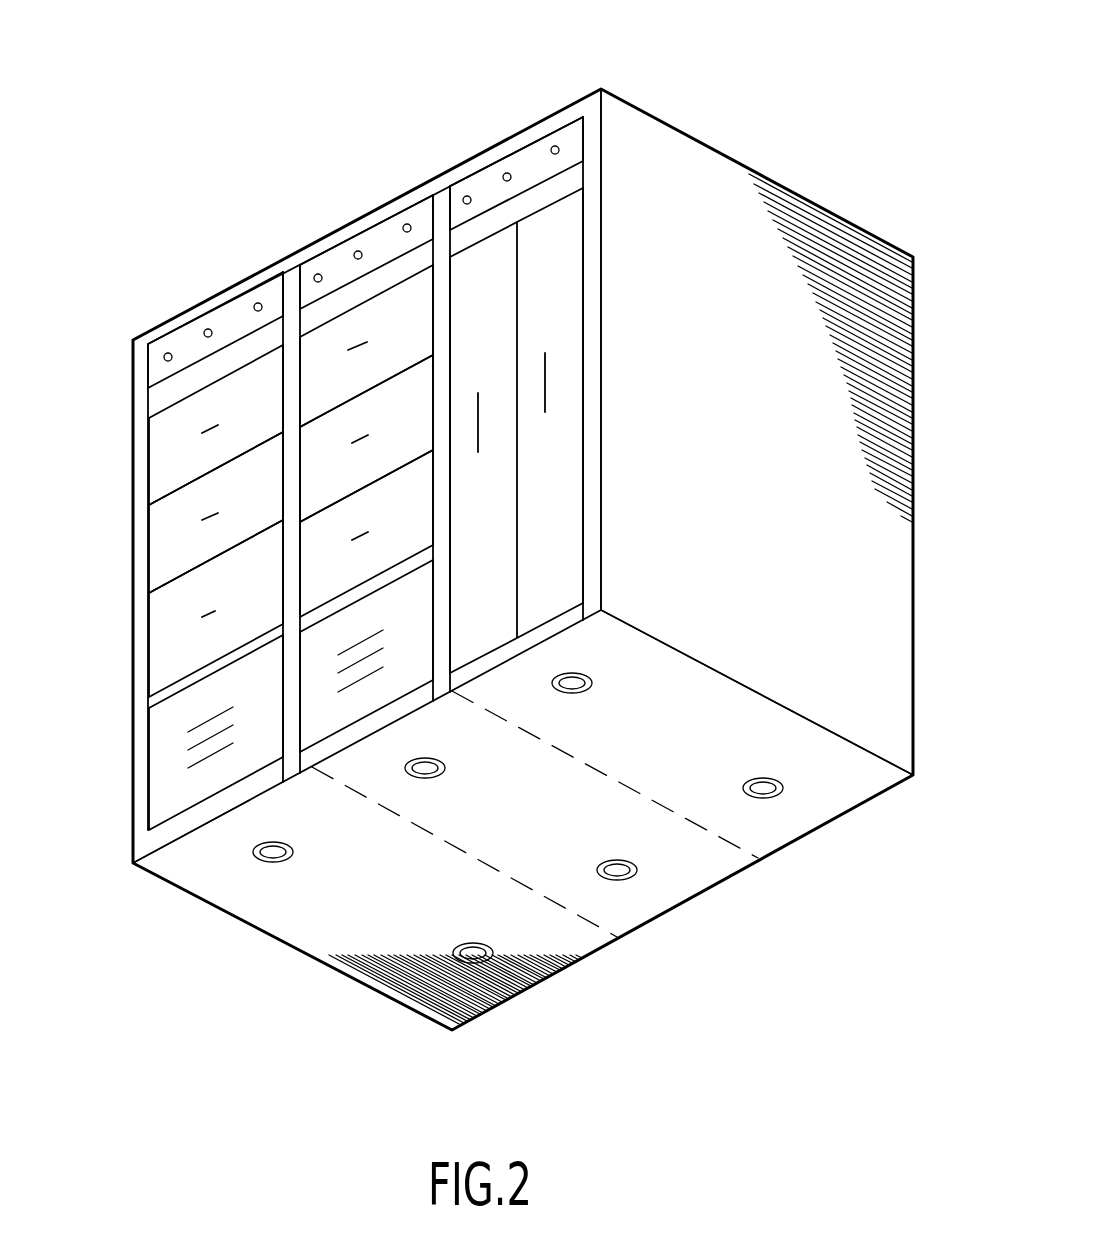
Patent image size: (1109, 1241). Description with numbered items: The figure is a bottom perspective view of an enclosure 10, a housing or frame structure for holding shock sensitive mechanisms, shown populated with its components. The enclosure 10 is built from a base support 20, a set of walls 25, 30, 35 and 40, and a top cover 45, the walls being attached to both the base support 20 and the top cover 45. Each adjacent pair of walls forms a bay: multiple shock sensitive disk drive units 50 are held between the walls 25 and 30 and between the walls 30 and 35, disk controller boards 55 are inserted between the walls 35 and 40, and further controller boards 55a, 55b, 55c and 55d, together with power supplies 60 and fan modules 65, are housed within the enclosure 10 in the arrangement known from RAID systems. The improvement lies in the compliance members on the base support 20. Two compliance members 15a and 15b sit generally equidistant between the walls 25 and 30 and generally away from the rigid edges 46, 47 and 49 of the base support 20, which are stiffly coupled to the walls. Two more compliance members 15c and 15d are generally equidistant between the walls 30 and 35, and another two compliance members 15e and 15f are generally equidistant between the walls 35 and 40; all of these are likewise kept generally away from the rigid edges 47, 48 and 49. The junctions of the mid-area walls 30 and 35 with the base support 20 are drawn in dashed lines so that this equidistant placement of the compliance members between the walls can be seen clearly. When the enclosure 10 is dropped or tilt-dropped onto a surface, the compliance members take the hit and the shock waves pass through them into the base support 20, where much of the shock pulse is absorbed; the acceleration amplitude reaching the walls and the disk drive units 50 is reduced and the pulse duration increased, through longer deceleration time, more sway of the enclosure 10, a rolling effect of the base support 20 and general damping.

The enclosure 10 is at (708, 82).
The compliance member 15a is at (273, 858).
The compliance member 15b is at (478, 962).
The compliance member 15c is at (430, 775).
The compliance member 15d is at (620, 876).
The compliance member 15e is at (575, 688).
The compliance member 15f is at (766, 793).
The base support 20 is at (213, 880).
The wall 25 is at (130, 555).
The wall 30 is at (292, 605).
The wall 35 is at (438, 337).
The wall 40 is at (600, 222).
The top cover 45 is at (285, 252).
The rigid edge 46 is at (242, 921).
The rigid edge 47 is at (183, 837).
The rigid edge 48 is at (747, 687).
The rigid edge 49 is at (500, 1003).
The shock sensitive disk drive unit 50 is at (229, 600).
The disk controller board 55 is at (465, 317).
The disk controller board 55a is at (230, 418).
The disk controller board 55b is at (373, 334).
The disk controller board 55c is at (230, 508).
The disk controller board 55d is at (380, 420).
The power supply 60 is at (243, 718).
The fan module 65 is at (517, 158).